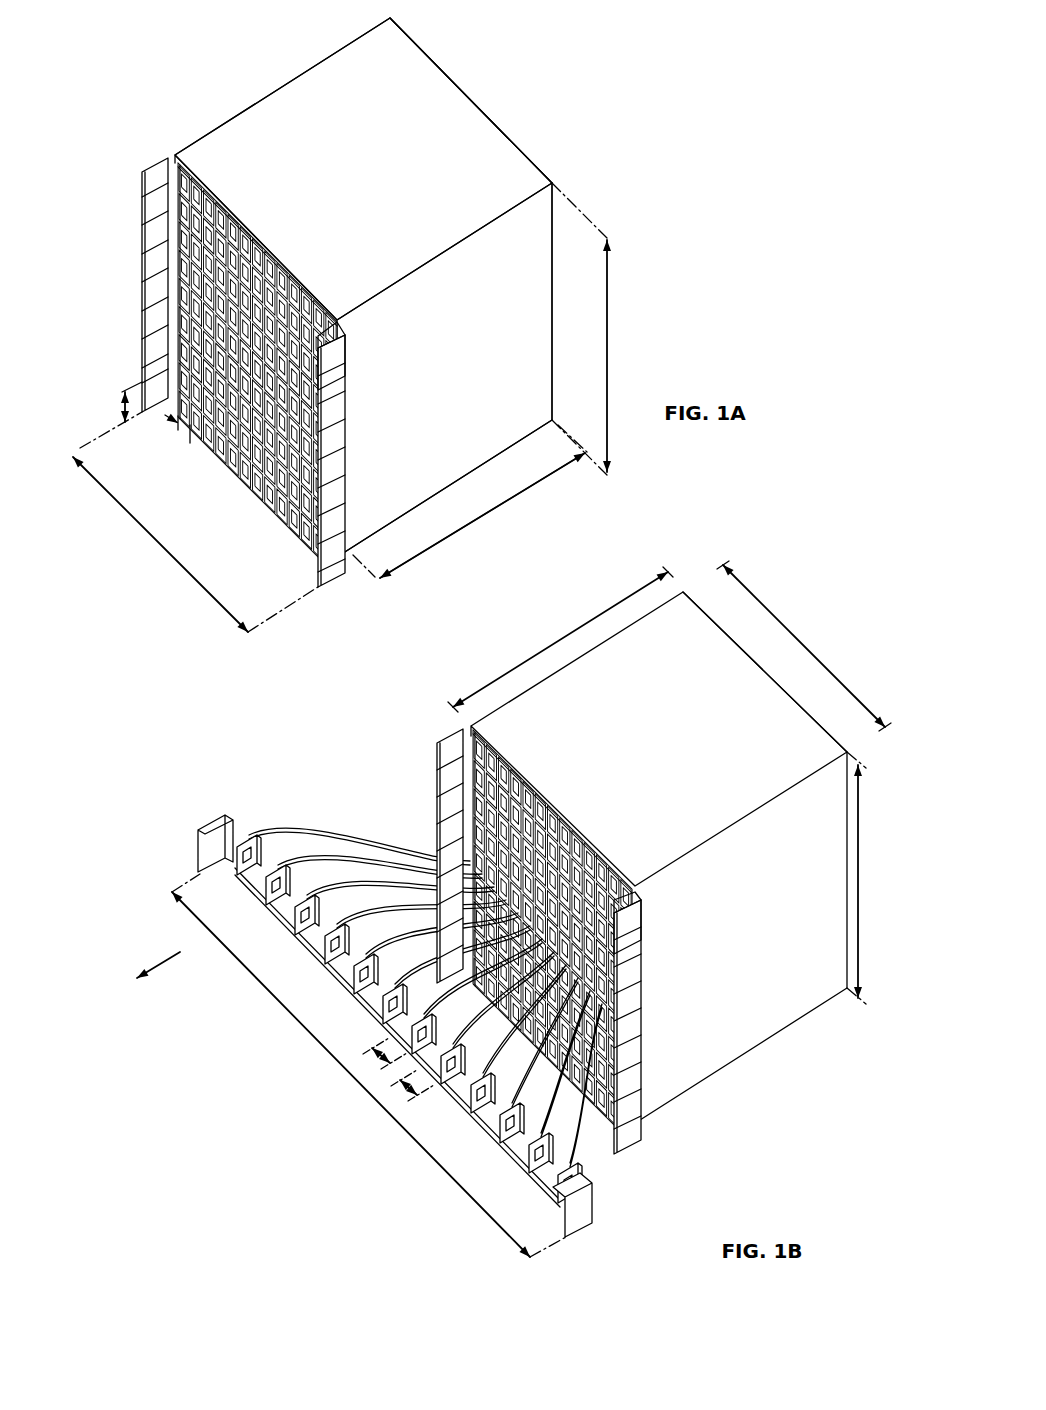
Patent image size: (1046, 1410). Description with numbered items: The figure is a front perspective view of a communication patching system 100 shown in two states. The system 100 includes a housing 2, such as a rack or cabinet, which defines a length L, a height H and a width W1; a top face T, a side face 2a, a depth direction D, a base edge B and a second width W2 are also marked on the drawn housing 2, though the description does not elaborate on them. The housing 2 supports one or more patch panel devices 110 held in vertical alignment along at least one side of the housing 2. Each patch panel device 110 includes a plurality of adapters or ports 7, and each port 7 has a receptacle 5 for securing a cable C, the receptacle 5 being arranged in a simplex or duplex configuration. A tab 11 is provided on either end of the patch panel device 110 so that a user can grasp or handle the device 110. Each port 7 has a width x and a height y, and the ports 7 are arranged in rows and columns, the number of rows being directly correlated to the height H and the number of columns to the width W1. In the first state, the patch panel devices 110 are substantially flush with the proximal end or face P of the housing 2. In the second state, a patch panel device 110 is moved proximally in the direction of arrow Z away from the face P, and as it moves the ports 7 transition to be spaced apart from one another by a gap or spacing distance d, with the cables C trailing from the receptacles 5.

In FIG. 1A, the communication patching system 100 is at (352, 323).
In FIG. 1B, the communication patching system 100 is at (502, 876).
In FIG. 1A, the housing 2 is at (381, 287).
In FIG. 1B, the housing 2 is at (795, 1007).
In FIG. 1A, the side face of body 2a is at (558, 320).
In FIG. 1A, the receptacle 5 is at (257, 352).
In FIG. 1B, the receptacle 5 is at (268, 880).
In FIG. 1A, the port 7 is at (180, 178).
In FIG. 1B, the port 7 is at (247, 833).
In FIG. 1A, the tab 11 is at (340, 418).
In FIG. 1B, the tab 11 is at (633, 988).
In FIG. 1A, the patch panel device 110 is at (353, 336).
In FIG. 1B, the patch panel device 110 is at (648, 903).
In FIG. 1A, the top face T is at (322, 78).
In FIG. 1A, the depth direction D is at (515, 147).
In FIG. 1B, the depth direction D is at (687, 590).
In FIG. 1A, the proximal end or face of the housing P is at (273, 250).
In FIG. 1A, the height H is at (608, 332).
In FIG. 1B, the height H is at (858, 862).
In FIG. 1A, the base edge B is at (432, 492).
In FIG. 1A, the length L is at (488, 510).
In FIG. 1B, the length L is at (547, 648).
In FIG. 1A, the width W1 is at (167, 550).
In FIG. 1B, the width W1 is at (803, 647).
In FIG. 1B, the second width W2 is at (345, 1068).
In FIG. 1A, the width of port x is at (192, 443).
In FIG. 1A, the height of port y is at (118, 408).
In FIG. 1B, the gap or spacing distance d is at (367, 1057).
In FIG. 1B, the cable C is at (355, 838).
In FIG. 1B, the direction of arrow Z is at (146, 978).